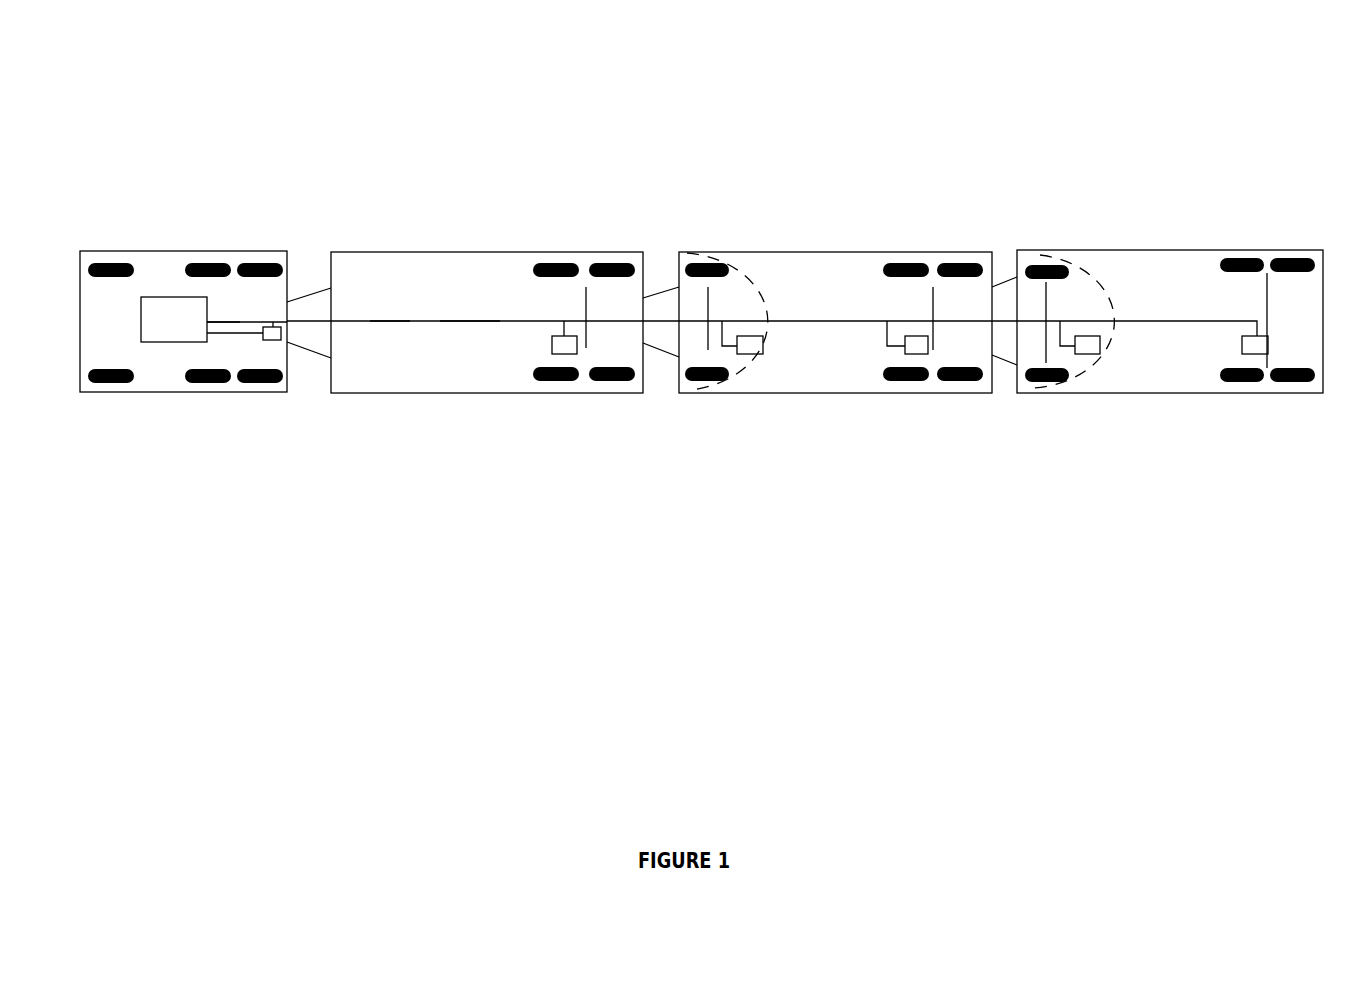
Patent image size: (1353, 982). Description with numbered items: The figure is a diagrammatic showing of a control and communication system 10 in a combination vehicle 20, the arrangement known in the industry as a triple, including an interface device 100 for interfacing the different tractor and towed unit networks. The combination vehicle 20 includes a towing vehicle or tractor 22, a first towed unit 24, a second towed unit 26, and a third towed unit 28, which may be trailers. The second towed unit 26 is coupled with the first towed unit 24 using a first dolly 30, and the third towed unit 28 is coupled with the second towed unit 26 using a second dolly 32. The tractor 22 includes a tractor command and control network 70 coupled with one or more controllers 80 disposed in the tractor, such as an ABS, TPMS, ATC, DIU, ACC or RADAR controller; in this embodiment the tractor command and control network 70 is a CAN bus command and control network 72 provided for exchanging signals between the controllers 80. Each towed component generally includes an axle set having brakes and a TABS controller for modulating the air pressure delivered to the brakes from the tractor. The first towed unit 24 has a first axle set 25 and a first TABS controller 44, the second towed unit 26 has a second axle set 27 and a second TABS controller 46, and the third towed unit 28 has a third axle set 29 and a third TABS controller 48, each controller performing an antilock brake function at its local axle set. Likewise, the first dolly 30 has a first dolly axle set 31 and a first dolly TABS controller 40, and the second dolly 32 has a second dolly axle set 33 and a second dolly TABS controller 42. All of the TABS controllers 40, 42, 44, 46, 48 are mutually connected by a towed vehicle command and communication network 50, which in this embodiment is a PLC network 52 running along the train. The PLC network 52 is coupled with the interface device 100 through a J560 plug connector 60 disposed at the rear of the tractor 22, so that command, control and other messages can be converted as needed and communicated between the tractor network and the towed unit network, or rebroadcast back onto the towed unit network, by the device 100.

The control and communication system 10 is at (465, 320).
The combination vehicle 20 is at (715, 183).
The tractor 22 is at (137, 250).
The first towed unit 24 is at (569, 252).
The first axle set 25 is at (590, 395).
The second towed unit 26 is at (884, 252).
The second axle set 27 is at (952, 390).
The third towed unit 28 is at (1232, 250).
The third axle set 29 is at (1308, 390).
The first dolly 30 is at (708, 410).
The first dolly axle set 31 is at (672, 273).
The second dolly 32 is at (1037, 408).
The second dolly axle set 33 is at (1007, 256).
The first dolly TABS controller 40 is at (752, 338).
The second dolly TABS controller 42 is at (1077, 337).
The first TABS controller 44 is at (552, 345).
The second TABS controller 46 is at (905, 350).
The third TABS controller 48 is at (1243, 355).
The towed vehicle command and communication network 50 is at (363, 320).
The PLC network 52 is at (387, 320).
The J560 plug connector 60 is at (249, 321).
The tractor command and control network 70 is at (222, 324).
The CAN bus command and control network 72 is at (247, 334).
The controller 80 is at (173, 320).
The device 100 is at (280, 340).